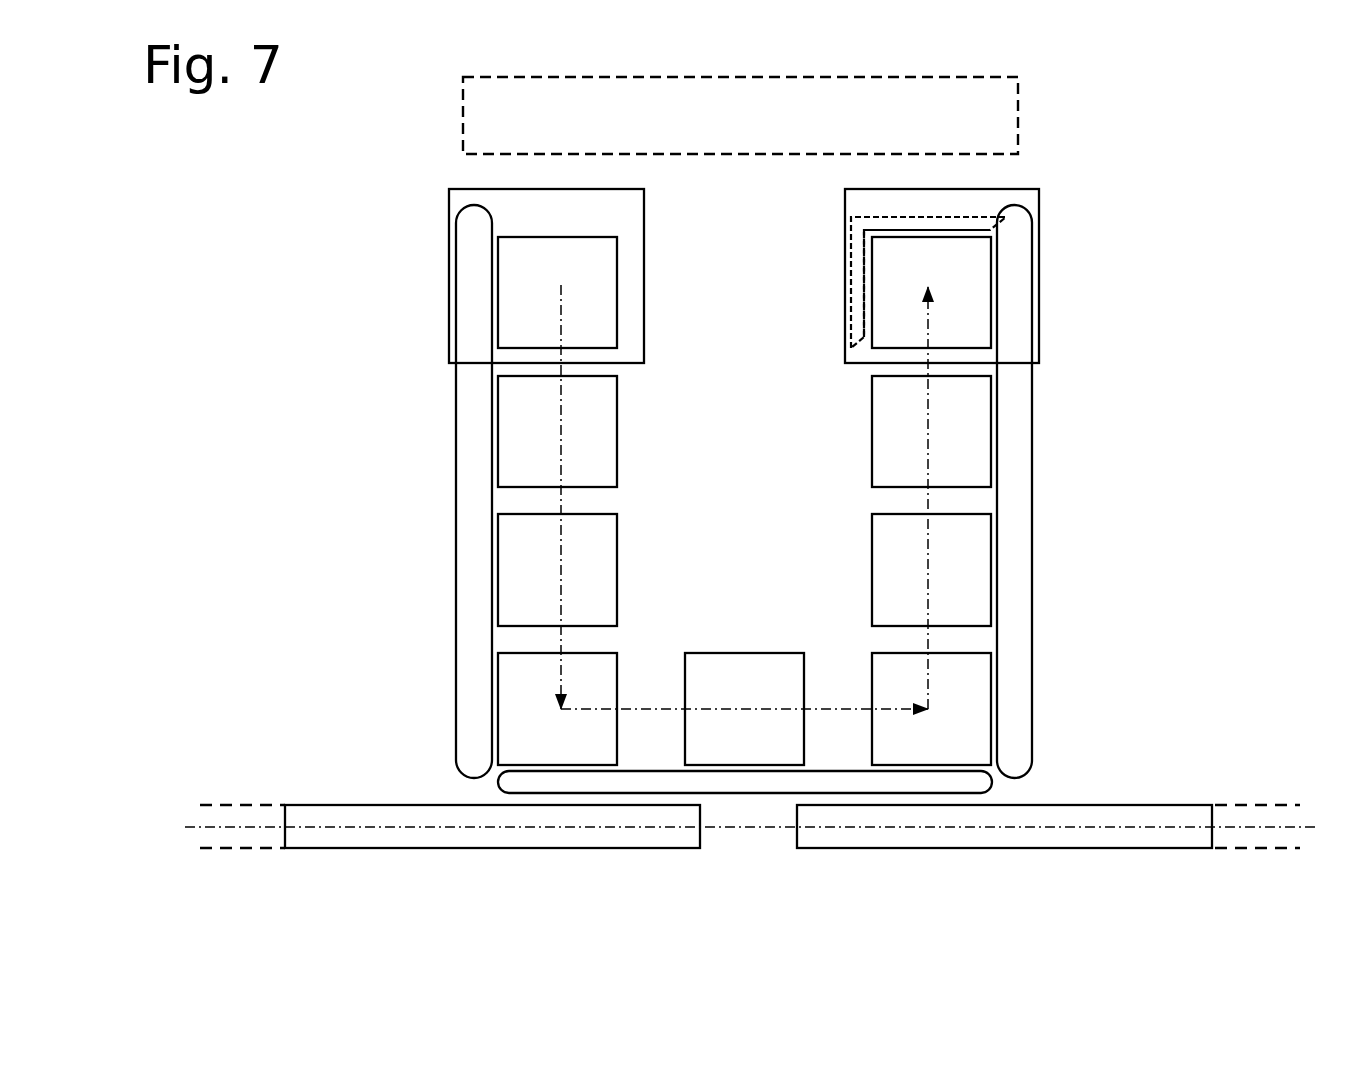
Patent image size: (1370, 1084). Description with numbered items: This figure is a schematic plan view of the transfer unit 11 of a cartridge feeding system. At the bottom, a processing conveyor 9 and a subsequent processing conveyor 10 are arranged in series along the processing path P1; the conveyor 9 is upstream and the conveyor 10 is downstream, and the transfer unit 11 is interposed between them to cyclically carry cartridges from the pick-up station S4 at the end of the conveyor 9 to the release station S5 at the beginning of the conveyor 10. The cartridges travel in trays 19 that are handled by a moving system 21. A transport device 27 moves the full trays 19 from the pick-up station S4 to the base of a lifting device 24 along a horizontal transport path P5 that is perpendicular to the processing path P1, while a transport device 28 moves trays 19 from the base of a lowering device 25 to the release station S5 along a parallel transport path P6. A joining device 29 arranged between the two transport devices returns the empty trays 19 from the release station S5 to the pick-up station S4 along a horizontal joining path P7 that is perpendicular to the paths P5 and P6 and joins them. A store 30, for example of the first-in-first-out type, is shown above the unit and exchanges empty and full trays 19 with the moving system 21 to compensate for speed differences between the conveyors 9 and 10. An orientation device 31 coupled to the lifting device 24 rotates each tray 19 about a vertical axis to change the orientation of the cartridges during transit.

The processing conveyor 9 is at (1048, 802).
The processing conveyor 10 is at (450, 806).
The transfer unit 11 is at (1233, 272).
The tray 19 is at (741, 680).
The moving system 21 is at (268, 535).
The lifting device 24 is at (1048, 167).
The lowering device 25 is at (434, 169).
The transport device 27 is at (1088, 446).
The transport device 28 is at (414, 460).
The joining device 29 is at (734, 806).
The store 30 is at (740, 115).
The orientation device 31 is at (858, 279).
The pick-up station S4 is at (920, 852).
The release station S5 is at (562, 862).
The processing path P1 is at (1246, 827).
The transport path P5 is at (926, 447).
The transport path P6 is at (561, 438).
The joining path P7 is at (643, 709).